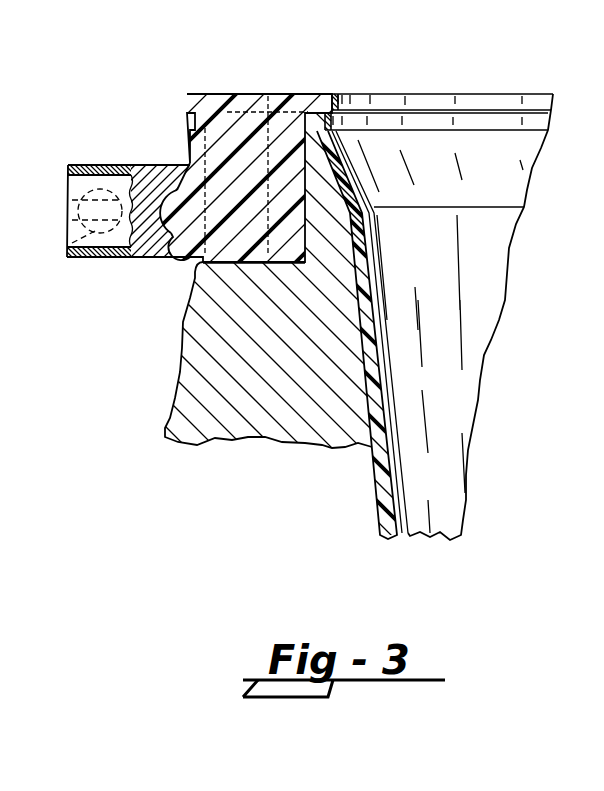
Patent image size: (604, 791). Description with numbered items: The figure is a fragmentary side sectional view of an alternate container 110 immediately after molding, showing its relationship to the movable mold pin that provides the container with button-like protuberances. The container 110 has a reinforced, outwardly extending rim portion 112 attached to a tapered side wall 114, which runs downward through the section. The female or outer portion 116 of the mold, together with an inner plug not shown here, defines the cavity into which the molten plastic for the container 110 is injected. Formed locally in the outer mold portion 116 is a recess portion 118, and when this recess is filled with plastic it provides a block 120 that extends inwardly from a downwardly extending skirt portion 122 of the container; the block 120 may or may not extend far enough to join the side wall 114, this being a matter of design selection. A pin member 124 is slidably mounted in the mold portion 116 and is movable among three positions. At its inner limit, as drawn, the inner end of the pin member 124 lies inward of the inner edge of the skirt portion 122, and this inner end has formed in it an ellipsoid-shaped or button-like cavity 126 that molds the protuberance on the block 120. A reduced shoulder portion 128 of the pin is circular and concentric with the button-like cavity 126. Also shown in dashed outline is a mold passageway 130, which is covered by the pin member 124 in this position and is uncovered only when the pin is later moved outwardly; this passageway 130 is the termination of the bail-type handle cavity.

The alternate container 110 is at (568, 326).
The rim portion 112 is at (268, 112).
The tapered side wall 114 is at (378, 473).
The outer portion of the mold 116 is at (198, 368).
The recess portion 118 is at (232, 263).
The block 120 is at (243, 118).
The skirt portion 122 is at (191, 143).
The pin member 124 is at (67, 183).
The button-like cavity 126 is at (143, 250).
The reduced shoulder portion 128 is at (178, 240).
The mold passageway 130 is at (70, 247).